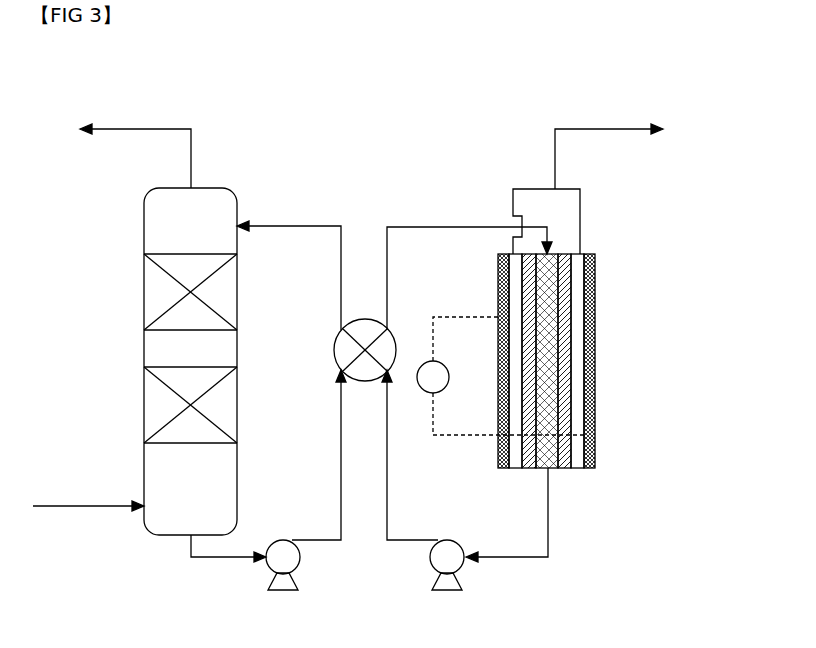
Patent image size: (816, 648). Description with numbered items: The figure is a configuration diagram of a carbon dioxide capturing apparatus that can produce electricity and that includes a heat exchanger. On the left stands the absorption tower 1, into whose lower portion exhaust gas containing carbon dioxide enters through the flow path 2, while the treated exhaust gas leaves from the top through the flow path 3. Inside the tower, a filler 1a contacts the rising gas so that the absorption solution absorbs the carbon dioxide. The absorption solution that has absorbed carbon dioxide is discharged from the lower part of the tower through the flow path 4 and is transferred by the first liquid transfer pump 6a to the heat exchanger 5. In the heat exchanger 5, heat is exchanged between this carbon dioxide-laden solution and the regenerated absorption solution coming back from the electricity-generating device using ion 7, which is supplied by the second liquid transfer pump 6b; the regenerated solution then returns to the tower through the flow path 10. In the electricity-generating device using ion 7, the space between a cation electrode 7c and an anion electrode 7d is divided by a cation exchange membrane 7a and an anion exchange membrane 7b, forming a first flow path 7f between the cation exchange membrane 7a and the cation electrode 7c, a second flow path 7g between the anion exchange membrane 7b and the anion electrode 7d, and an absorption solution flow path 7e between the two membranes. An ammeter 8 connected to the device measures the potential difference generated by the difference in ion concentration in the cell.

The absorption tower 1 is at (144, 350).
The filler 1a is at (168, 302).
The flow path for exhaust gas containing carbon dioxide 2 is at (78, 500).
The flow path for exhaust gas passing through the absorption tower 3 is at (120, 127).
The flow path for discharging absorption solution that has absorbed carbon dioxide 4 is at (215, 560).
The heat exchanger 5 is at (336, 346).
The first liquid transfer pump 6a is at (283, 594).
The second liquid transfer pump 6b is at (447, 594).
The electricity-generating device using ion 7 is at (560, 314).
The cation exchange membrane 7a is at (523, 280).
The anion exchange membrane 7b is at (570, 345).
The cation electrode 7c is at (500, 470).
The anion electrode 7d is at (597, 466).
The absorption solution flow path 7e is at (557, 305).
The first flow path 7f is at (508, 420).
The second flow path 7g is at (580, 420).
The ammeter 8 is at (424, 395).
The flow path for supplying regenerated absorption solution 10 is at (510, 563).